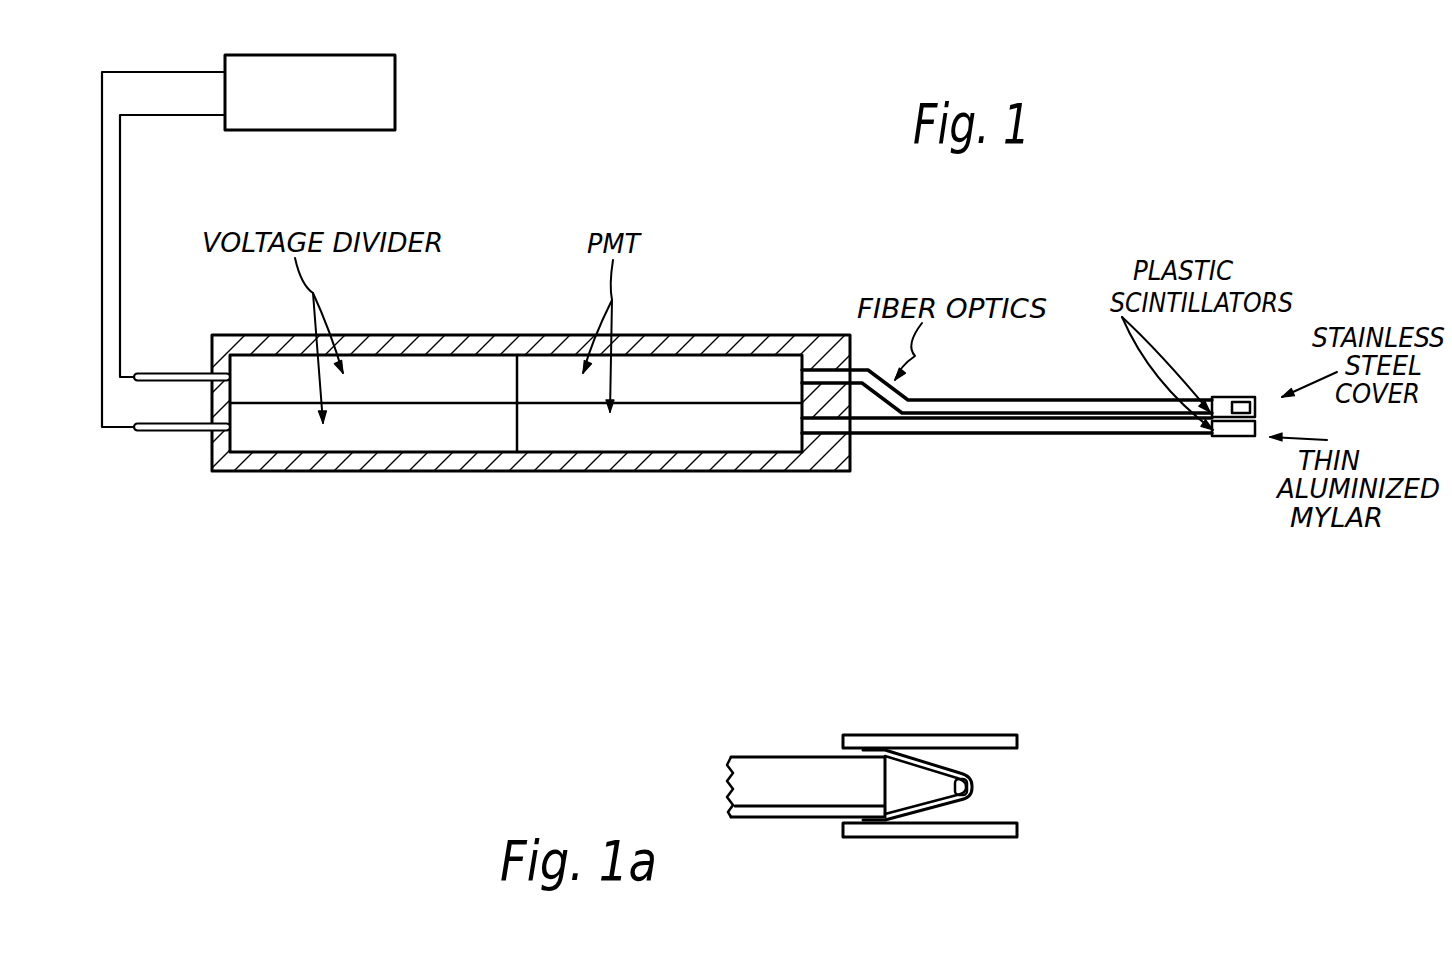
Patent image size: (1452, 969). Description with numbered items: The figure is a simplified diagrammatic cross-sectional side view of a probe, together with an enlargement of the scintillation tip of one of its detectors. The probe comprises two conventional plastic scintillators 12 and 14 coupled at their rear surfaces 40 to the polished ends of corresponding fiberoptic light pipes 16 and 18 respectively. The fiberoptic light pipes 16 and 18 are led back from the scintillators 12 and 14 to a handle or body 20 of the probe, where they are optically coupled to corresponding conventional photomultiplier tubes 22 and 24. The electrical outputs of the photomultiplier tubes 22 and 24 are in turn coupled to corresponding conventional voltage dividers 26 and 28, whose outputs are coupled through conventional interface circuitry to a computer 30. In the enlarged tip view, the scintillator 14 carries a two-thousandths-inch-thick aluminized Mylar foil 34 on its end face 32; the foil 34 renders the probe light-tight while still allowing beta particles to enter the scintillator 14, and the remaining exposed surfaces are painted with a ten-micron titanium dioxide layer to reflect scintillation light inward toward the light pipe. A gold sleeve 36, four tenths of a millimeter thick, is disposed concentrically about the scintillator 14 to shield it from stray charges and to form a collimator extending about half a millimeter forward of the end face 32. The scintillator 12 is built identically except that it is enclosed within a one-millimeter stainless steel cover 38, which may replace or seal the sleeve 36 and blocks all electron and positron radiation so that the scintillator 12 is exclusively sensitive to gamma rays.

In FIG. 1, the plastic scintillator 12 is at (1252, 397).
In FIG. 1, the plastic scintillator 14 is at (1245, 438).
In FIG. 1A, the plastic scintillator 14 is at (907, 775).
In FIG. 1, the fiberoptic light pipe 16 is at (1027, 407).
In FIG. 1A, the fiberoptic light pipe 16 is at (785, 768).
In FIG. 1, the fiberoptic light pipe 18 is at (1032, 422).
In FIG. 1, the handle or body 20 is at (602, 471).
In FIG. 1, the photomultiplier tube 22 is at (718, 363).
In FIG. 1, the photomultiplier tube 24 is at (750, 442).
In FIG. 1, the voltage divider 26 is at (470, 375).
In FIG. 1, the voltage divider 28 is at (442, 442).
In FIG. 1, the computer 30 is at (397, 90).
In FIG. 1A, the end face 32 is at (968, 788).
In FIG. 1A, the aluminized Mylar foil 34 is at (972, 780).
In FIG. 1A, the gold sleeve 36 is at (950, 835).
In FIG. 1, the stainless steel cover 38 is at (1258, 412).
In FIG. 1A, the rear surface 40 is at (910, 797).